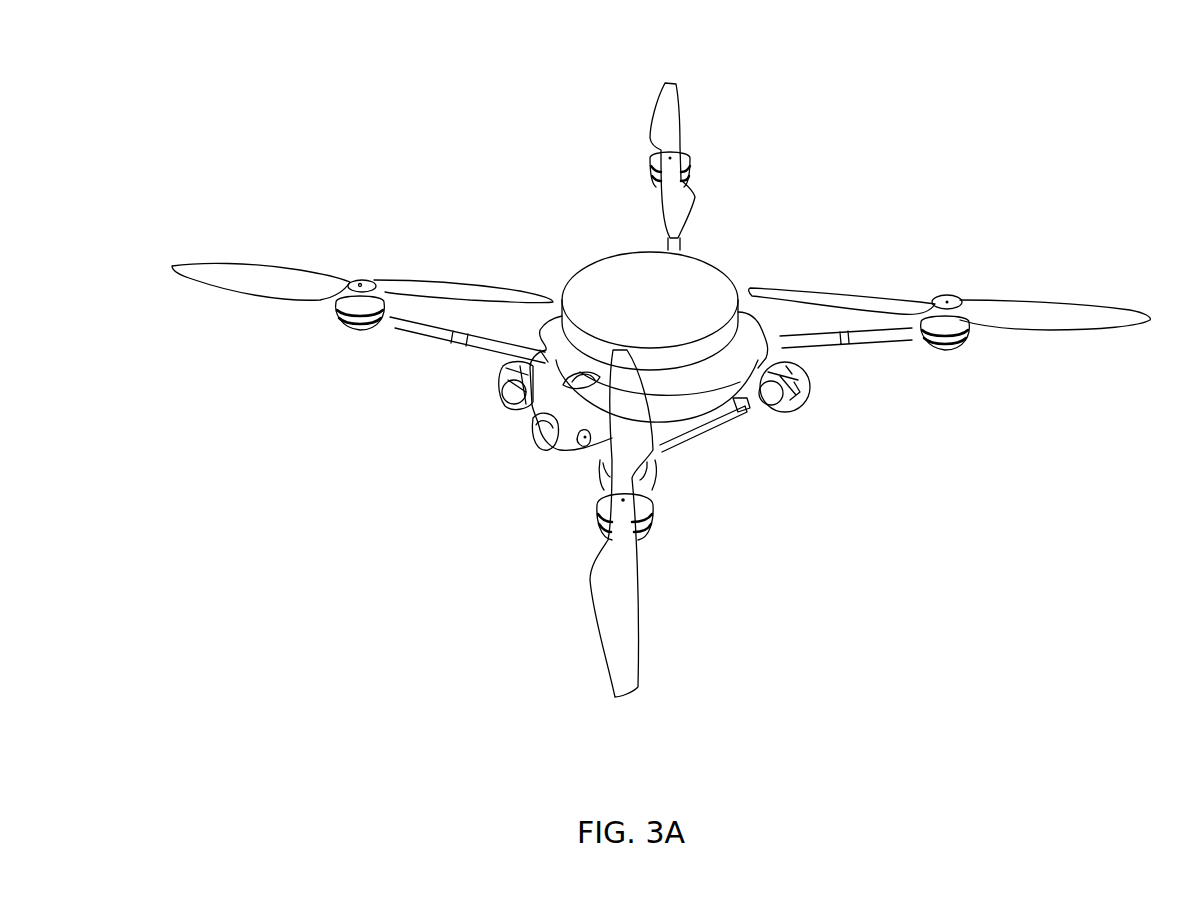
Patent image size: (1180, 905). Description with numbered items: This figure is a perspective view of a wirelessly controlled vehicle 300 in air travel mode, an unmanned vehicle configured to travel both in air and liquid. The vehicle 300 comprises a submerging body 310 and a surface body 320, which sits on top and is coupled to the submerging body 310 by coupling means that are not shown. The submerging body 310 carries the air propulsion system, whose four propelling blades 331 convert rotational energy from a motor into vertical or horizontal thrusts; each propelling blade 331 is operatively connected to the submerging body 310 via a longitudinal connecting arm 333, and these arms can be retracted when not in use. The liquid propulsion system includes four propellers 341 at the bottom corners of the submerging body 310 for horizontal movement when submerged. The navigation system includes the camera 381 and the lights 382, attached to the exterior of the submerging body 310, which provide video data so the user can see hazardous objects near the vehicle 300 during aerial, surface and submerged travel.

The wirelessly controlled vehicle 300 is at (1062, 126).
The submerging body 310 is at (705, 384).
The surface body 320 is at (632, 292).
The propelling blades 331 is at (232, 275).
The longitudinal connecting arms 333 is at (418, 322).
The propellers 341 is at (495, 392).
The camera 381 is at (540, 437).
The lights 382 is at (530, 400).